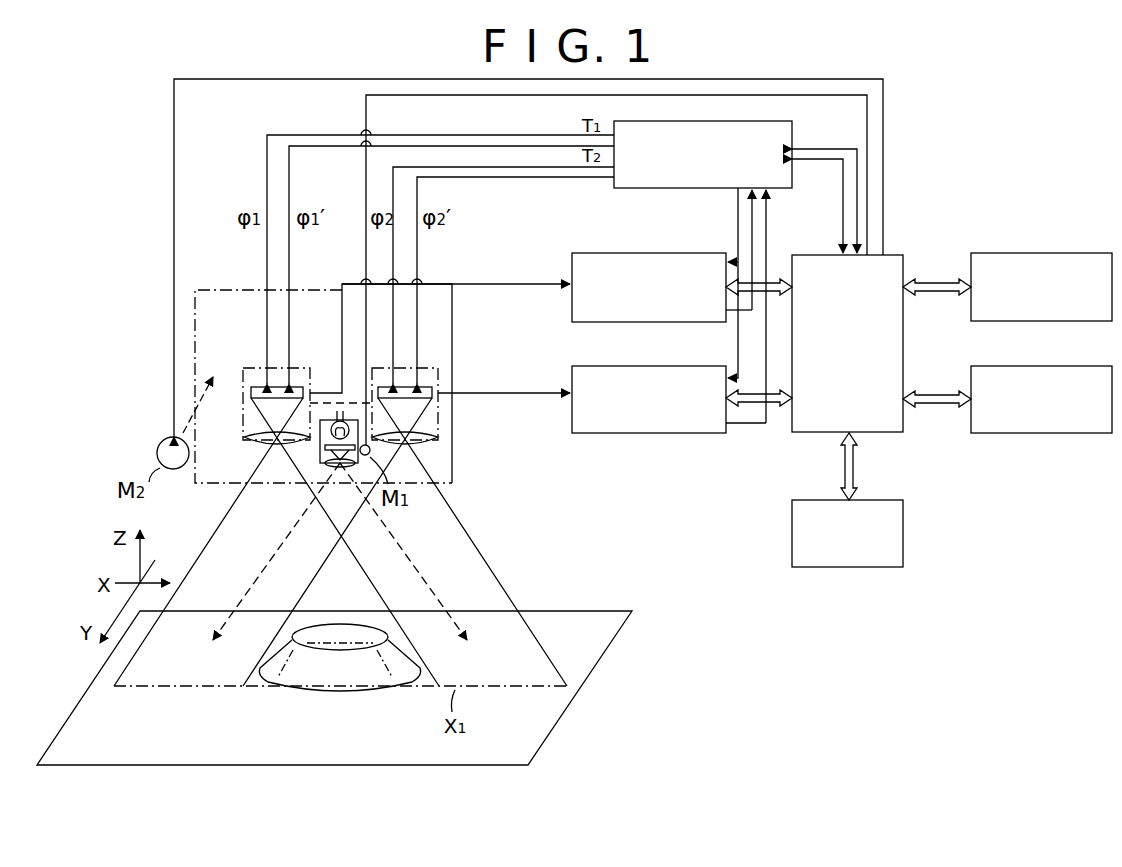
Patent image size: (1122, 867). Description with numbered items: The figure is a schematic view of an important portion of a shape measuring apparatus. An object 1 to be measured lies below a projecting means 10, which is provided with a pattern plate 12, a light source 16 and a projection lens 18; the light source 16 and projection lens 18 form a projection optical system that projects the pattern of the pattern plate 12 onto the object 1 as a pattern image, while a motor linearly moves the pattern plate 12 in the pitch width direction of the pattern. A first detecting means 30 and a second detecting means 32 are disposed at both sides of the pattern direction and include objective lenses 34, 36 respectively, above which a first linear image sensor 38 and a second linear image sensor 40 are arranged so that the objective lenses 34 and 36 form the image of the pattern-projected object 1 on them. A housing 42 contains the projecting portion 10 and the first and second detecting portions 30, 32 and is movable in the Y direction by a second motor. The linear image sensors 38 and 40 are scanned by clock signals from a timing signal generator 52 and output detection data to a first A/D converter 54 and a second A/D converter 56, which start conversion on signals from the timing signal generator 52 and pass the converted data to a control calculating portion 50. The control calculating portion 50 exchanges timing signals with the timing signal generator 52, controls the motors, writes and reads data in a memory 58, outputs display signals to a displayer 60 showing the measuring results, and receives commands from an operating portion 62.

The object to be measured 1 is at (292, 678).
The projecting means 10 is at (325, 362).
The pattern plate 12 is at (322, 440).
The light source 16 is at (343, 418).
The projection lens 18 is at (342, 468).
The first detecting means 30 is at (248, 372).
The second detecting means 32 is at (440, 372).
The objective lens 34 is at (268, 440).
The objective lens 36 is at (435, 444).
The first linear image sensor 38 is at (255, 398).
The second linear image sensor 40 is at (432, 392).
The housing 42 is at (228, 290).
The control calculating portion 50 is at (805, 428).
The timing signal generator 52 is at (640, 190).
The first A/D converter 54 is at (641, 258).
The second A/D converter 56 is at (672, 368).
The memory 58 is at (852, 570).
The displayer 60 is at (1013, 322).
The operating portion 62 is at (1010, 433).